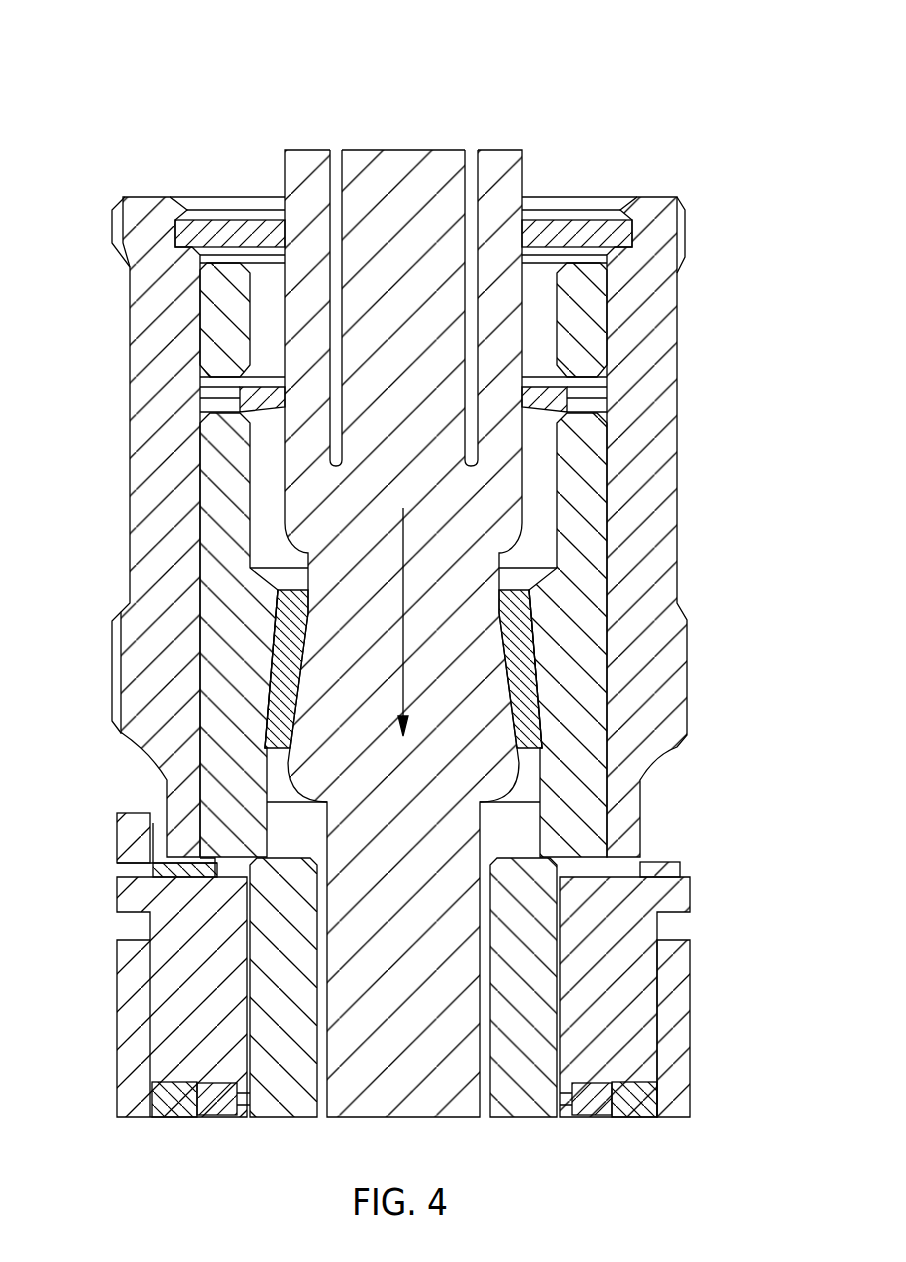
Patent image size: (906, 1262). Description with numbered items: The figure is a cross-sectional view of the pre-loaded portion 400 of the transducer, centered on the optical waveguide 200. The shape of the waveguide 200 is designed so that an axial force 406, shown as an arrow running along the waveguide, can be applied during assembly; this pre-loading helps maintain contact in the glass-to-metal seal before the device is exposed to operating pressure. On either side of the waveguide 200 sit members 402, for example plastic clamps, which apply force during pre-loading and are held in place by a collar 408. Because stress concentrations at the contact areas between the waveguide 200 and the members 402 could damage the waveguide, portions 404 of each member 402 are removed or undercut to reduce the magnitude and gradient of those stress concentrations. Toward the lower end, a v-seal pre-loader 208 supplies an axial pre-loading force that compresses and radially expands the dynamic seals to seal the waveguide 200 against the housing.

The waveguide 200 is at (377, 158).
The v-seal pre-loader 208 is at (640, 902).
The pre-loaded portion 400 is at (607, 127).
The member 402 is at (290, 683).
The removed portion 404 is at (287, 603).
The axial force 406 is at (400, 568).
The collar 408 is at (583, 685).